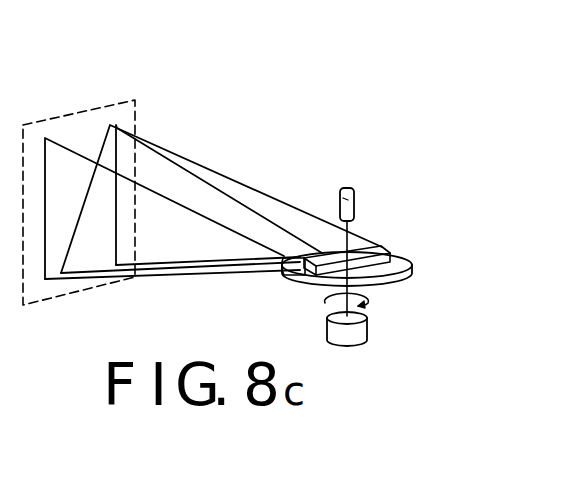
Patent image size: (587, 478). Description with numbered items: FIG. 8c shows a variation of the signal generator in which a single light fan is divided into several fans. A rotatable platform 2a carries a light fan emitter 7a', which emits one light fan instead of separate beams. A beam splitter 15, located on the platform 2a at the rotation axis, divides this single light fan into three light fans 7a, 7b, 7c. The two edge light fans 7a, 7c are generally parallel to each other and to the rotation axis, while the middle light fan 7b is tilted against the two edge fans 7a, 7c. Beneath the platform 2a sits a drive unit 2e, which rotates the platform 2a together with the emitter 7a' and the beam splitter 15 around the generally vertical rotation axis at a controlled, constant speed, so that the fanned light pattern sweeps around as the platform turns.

The light fan 7a is at (163, 173).
The middle light fan 7b is at (109, 145).
The light fan 7c is at (157, 149).
The light fan emitter 7a' is at (365, 223).
The platform 2a is at (397, 260).
The beam splitter 15 is at (309, 274).
The drive unit 2e is at (368, 330).